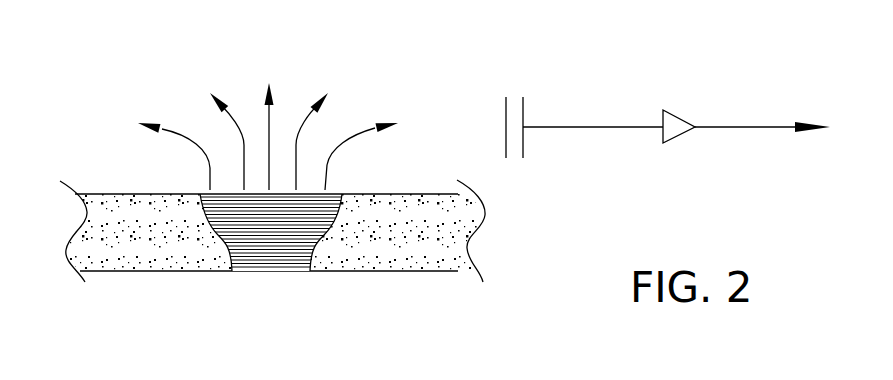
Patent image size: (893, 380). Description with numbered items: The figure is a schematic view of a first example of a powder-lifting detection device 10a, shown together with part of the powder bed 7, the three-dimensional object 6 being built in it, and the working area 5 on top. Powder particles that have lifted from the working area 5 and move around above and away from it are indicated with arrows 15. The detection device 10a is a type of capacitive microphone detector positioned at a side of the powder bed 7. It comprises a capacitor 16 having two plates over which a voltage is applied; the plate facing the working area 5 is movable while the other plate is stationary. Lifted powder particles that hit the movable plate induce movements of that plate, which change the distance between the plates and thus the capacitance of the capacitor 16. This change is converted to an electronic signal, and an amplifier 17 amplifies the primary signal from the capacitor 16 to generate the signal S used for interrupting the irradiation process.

The working area 5 is at (231, 193).
The three-dimensional object 6 is at (276, 256).
The powder bed 7 is at (148, 257).
The arrows 15 is at (365, 132).
The capacitor 16 is at (525, 108).
The amplifier 17 is at (678, 119).
The powder-lifting detection device 10a is at (668, 135).